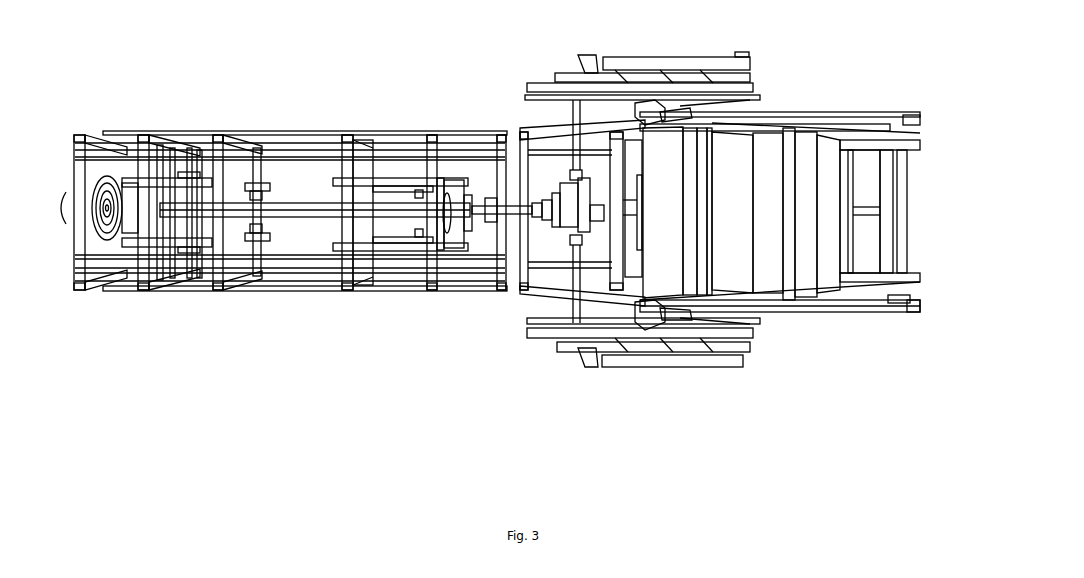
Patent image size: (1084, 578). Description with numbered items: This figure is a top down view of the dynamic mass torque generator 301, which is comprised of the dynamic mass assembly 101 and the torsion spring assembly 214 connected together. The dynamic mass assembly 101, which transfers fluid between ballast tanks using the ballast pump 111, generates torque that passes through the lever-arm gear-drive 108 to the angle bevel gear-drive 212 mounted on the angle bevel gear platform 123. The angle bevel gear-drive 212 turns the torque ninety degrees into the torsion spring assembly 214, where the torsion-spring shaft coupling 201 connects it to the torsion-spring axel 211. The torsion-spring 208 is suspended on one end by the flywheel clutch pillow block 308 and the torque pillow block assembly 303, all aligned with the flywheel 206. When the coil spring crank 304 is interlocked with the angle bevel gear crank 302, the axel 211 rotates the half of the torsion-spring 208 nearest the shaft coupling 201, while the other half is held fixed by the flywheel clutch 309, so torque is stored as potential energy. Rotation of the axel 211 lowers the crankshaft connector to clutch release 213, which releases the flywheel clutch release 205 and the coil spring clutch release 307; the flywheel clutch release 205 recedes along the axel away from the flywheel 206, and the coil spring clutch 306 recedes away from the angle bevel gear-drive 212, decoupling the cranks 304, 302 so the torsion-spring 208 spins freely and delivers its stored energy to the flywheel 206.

The dynamic mass assembly 101 is at (870, 312).
The lever-arm gear-drive 108 is at (745, 74).
The ballast pump 111 is at (875, 208).
The angle bevel gear platform 123 is at (595, 222).
The torsion-spring shaft coupling 201 is at (538, 230).
The flywheel clutch release 205 is at (245, 290).
The flywheel 206 is at (84, 290).
The torsion-spring 208 is at (330, 290).
The torsion-spring axel 211 is at (490, 290).
The angle bevel gear-drive 212 is at (563, 227).
The crankshaft connector to clutch release 213 is at (270, 183).
The torsion spring assembly 214 is at (258, 130).
The dynamic mass torque generator 301 is at (288, 205).
The angle bevel gear crank 302 is at (490, 198).
The torque pillow block assembly 303 is at (432, 257).
The coil spring crank 304 is at (462, 248).
The coil spring clutch 306 is at (440, 162).
The coil spring clutch release 307 is at (398, 170).
The flywheel clutch pillow block 308 is at (146, 290).
The flywheel clutch 309 is at (158, 180).